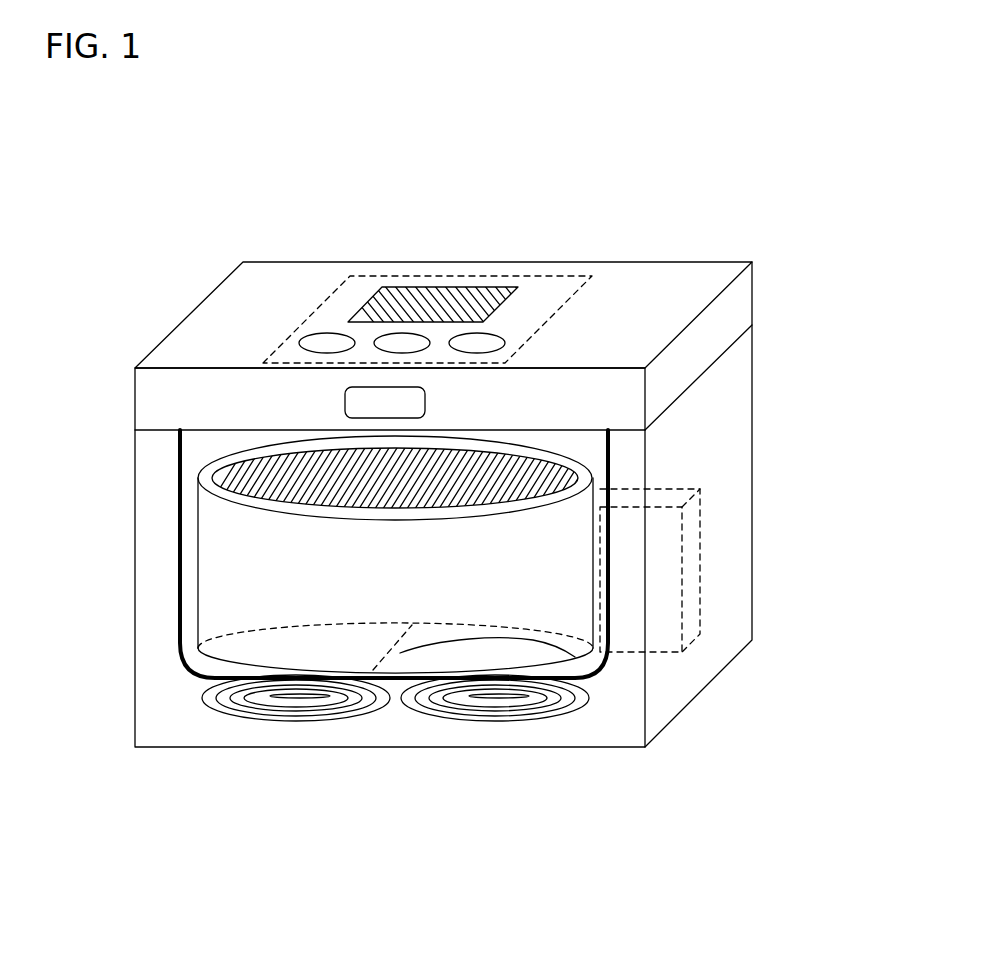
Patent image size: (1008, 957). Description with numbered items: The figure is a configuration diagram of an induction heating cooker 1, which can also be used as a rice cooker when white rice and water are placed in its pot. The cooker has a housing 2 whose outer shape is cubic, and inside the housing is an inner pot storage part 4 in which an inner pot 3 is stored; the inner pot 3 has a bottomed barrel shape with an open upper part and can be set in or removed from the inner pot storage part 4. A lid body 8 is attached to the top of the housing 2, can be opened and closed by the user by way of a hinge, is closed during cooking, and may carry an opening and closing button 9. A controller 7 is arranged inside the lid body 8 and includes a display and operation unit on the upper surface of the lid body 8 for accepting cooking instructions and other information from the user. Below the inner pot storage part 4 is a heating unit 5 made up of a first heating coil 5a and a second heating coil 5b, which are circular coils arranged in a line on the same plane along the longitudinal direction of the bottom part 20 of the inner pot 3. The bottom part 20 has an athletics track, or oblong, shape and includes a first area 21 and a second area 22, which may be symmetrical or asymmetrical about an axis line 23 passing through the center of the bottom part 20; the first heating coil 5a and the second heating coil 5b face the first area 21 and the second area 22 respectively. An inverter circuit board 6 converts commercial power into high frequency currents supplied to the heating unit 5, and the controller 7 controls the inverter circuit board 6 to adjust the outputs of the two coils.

The induction heating cooker 1 is at (780, 196).
The housing 2 is at (727, 428).
The inner pot 3 is at (197, 577).
The inner pot storage part 4 is at (180, 452).
The heating unit 5 is at (395, 805).
The first heating coil 5a is at (335, 722).
The second heating coil 5b is at (495, 754).
The inverter circuit board 6 is at (697, 570).
The controller 7 is at (519, 276).
The lid body 8 is at (717, 327).
The opening and closing button 9 is at (375, 400).
The bottom part 20 is at (550, 628).
The first area 21 is at (215, 642).
The second area 22 is at (543, 655).
The axis line 23 is at (583, 663).